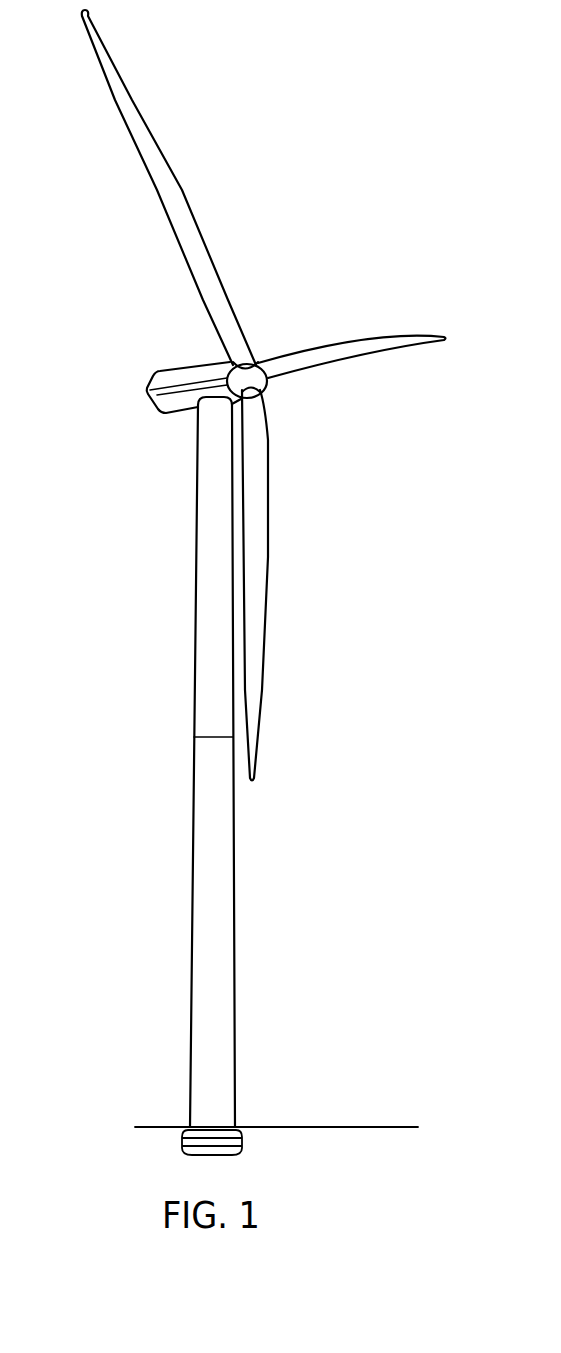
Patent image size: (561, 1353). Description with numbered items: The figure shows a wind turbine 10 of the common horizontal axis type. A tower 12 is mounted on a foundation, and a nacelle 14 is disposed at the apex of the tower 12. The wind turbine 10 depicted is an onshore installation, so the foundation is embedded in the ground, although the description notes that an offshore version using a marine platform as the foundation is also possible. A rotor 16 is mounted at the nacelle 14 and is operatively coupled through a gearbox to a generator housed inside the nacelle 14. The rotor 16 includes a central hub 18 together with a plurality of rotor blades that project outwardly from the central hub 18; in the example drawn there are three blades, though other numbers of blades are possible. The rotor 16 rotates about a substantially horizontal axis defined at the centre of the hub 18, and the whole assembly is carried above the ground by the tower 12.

The wind turbine 10 is at (381, 215).
The tower 12 is at (213, 883).
The nacelle 14 is at (173, 378).
The rotor 16 is at (270, 357).
The central hub 18 is at (270, 387).